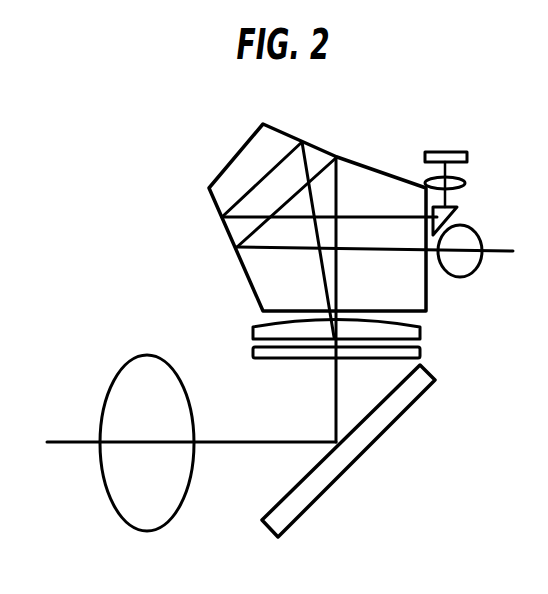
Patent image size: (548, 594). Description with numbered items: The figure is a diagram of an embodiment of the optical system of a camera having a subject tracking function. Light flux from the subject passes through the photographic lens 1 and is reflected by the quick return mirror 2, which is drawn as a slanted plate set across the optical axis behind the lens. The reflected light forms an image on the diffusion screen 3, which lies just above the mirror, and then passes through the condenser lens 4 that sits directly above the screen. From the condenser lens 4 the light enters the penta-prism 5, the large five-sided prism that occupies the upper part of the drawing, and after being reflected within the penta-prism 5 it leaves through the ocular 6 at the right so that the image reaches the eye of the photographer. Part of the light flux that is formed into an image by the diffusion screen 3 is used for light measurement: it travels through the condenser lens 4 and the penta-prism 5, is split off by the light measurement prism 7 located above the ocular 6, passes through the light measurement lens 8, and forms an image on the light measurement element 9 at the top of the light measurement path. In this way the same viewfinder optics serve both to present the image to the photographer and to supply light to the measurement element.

The photographic lens 1 is at (165, 357).
The quick return mirror 2 is at (388, 430).
The diffusion screen 3 is at (420, 351).
The condenser lens 4 is at (420, 328).
The penta-prism 5 is at (275, 123).
The ocular 6 is at (470, 227).
The light measurement prism 7 is at (455, 204).
The light measurement lens 8 is at (453, 174).
The light measurement element 9 is at (450, 151).